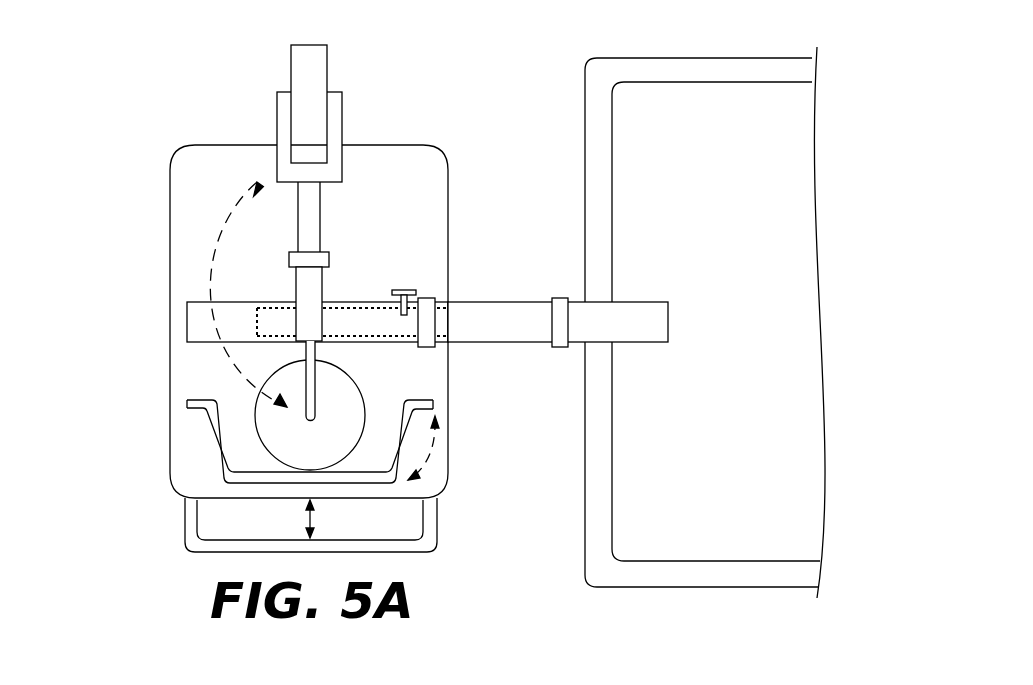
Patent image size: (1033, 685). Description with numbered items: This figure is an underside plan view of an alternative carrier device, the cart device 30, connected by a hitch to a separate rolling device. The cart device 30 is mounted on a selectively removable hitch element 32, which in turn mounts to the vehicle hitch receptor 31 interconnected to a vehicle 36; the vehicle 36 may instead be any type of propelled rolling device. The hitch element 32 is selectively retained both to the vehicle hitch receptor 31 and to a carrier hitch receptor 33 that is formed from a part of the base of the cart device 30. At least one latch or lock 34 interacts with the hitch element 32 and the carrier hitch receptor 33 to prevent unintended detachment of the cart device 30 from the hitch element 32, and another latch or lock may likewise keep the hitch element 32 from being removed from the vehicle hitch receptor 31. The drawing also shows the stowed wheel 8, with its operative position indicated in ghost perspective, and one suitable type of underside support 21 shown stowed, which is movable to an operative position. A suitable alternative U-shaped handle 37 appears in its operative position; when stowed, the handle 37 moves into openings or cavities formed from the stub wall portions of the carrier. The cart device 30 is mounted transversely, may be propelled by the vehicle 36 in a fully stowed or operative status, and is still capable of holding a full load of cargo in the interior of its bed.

The wheel 8 is at (350, 393).
The underside support 21 is at (216, 445).
The cart device 30 is at (185, 213).
The vehicle hitch receptor 31 is at (560, 298).
The selectively removable hitch element 32 is at (495, 325).
The carrier hitch receptor 33 is at (200, 313).
The lock 34 is at (408, 292).
The vehicle 36 is at (668, 68).
The alternative U-shaped handle 37 is at (185, 522).